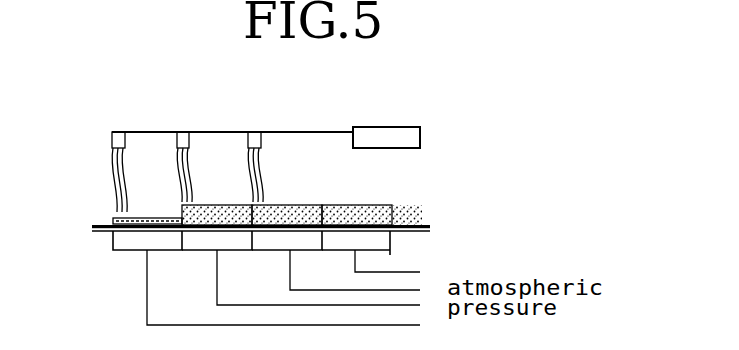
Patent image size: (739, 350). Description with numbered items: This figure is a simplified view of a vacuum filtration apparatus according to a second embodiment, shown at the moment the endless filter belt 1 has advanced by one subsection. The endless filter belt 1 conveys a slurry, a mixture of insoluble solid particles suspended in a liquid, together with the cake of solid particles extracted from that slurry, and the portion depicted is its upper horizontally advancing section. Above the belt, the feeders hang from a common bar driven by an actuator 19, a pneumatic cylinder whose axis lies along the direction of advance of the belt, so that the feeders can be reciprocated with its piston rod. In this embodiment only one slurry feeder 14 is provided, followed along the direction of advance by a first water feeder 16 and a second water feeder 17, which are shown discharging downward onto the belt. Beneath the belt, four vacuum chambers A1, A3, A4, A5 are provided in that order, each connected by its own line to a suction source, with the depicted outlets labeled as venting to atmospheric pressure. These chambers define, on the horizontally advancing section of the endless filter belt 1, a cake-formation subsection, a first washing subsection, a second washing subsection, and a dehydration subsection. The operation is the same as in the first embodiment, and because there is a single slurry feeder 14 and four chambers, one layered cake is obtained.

The endless filter belt 1 is at (102, 230).
The first slurry feeder 14 is at (121, 132).
The first water feeder 16 is at (184, 132).
The second water feeder 17 is at (255, 132).
The actuator 19 is at (373, 127).
The vacuum chamber A1 is at (138, 238).
The vacuum chamber A3 is at (212, 238).
The vacuum chamber A4 is at (283, 238).
The vacuum chamber A5 is at (353, 238).